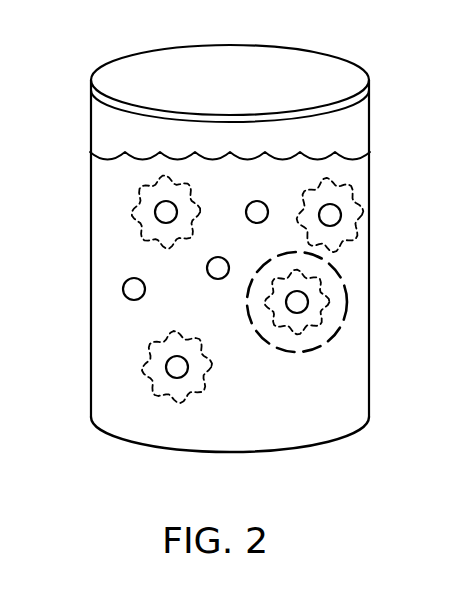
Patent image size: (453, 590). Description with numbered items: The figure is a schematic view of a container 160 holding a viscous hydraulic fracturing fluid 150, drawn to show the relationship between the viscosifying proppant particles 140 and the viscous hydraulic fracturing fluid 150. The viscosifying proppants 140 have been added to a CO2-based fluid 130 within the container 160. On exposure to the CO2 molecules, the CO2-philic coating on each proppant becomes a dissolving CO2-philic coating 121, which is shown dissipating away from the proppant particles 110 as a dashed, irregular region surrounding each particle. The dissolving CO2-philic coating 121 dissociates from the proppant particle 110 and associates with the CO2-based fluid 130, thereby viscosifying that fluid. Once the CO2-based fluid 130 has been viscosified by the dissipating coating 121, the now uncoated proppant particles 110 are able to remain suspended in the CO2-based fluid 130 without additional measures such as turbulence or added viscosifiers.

The proppant particle 110 is at (123, 290).
The dissolving CO2-philic coating 121 is at (351, 193).
The CO2-based fluid 130 is at (350, 265).
The viscosifying proppant particle 140 is at (177, 337).
The viscous hydraulic fracturing fluid 150 is at (115, 414).
The container 160 is at (91, 225).